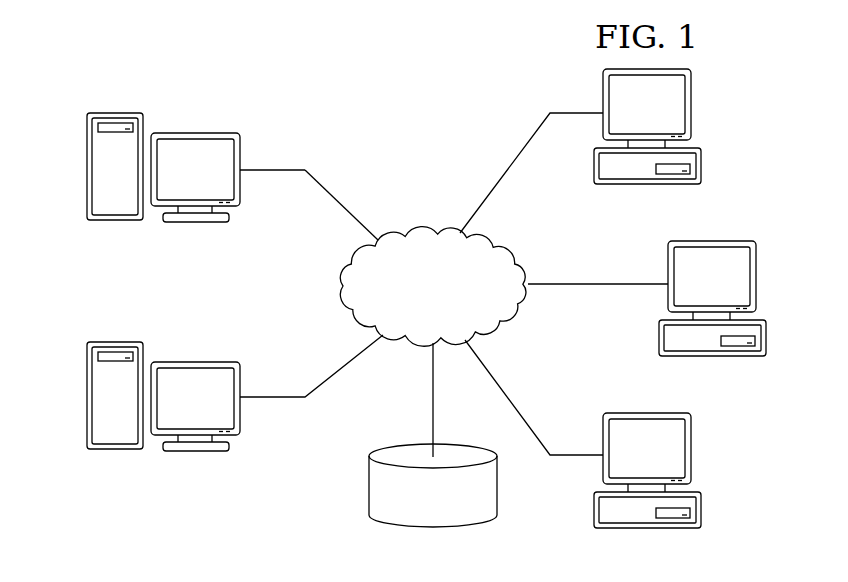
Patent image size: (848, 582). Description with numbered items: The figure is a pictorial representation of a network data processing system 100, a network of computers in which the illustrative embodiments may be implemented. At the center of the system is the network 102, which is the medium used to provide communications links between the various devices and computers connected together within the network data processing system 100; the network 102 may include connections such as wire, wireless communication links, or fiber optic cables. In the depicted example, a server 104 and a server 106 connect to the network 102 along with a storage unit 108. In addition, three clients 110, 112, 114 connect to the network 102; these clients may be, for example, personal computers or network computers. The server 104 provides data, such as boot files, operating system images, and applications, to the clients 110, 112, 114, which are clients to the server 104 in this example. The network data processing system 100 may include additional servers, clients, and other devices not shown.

The network data processing system 100 is at (303, 77).
The network 102 is at (426, 226).
The server 104 is at (87, 167).
The server 106 is at (87, 394).
The storage unit 108 is at (368, 489).
The client 110 is at (701, 166).
The client 112 is at (766, 338).
The client 114 is at (701, 510).